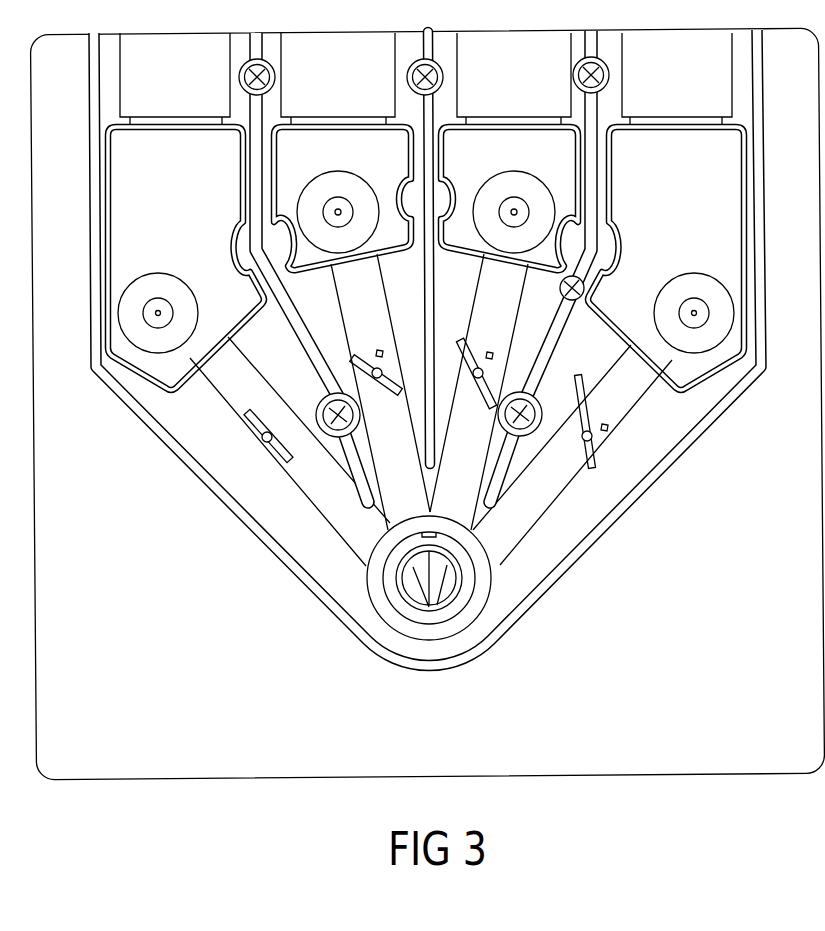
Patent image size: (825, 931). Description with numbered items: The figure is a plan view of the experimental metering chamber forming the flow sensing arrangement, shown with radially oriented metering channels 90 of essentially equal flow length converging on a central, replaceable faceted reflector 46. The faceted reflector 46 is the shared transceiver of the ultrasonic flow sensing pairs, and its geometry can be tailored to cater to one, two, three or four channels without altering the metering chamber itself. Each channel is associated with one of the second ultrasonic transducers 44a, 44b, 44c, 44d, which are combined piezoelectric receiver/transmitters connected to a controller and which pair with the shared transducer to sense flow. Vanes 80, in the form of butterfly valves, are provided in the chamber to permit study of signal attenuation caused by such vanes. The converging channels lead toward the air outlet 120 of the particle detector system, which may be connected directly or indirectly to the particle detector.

The second ultrasonic transducer 44a is at (186, 258).
The second ultrasonic transducer 44b is at (342, 197).
The second ultrasonic transducer 44c is at (509, 197).
The second ultrasonic transducer 44d is at (666, 258).
The vanes 80 is at (590, 432).
The metering channels 90 is at (540, 493).
The air outlet 120 is at (383, 593).
The faceted reflector 46 is at (443, 573).